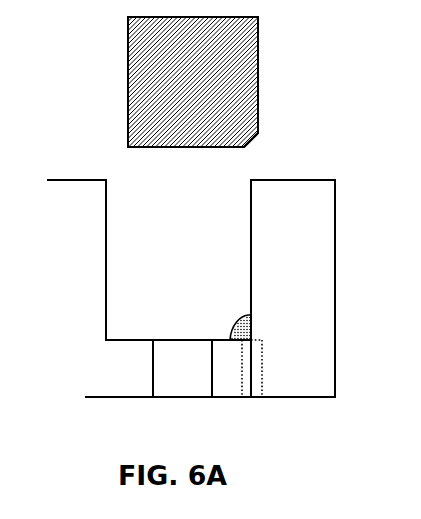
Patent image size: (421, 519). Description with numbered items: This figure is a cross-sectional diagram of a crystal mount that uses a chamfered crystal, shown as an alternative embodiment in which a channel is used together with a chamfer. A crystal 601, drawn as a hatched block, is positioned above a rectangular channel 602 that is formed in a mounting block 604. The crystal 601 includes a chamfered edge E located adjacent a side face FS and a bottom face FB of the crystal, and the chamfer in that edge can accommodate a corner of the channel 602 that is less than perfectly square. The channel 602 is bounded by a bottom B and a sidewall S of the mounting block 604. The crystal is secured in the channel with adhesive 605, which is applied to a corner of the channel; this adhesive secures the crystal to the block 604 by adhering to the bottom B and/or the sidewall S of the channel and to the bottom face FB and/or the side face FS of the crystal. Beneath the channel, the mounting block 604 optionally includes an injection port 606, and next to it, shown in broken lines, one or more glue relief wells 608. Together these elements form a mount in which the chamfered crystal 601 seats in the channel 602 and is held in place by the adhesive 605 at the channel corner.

The crystal 601 is at (127, 80).
The rectangular channel 602 is at (117, 195).
The mounting block 604 is at (297, 178).
The adhesive 605 is at (243, 316).
The injection port 606 is at (187, 393).
The glue relief well 608 is at (252, 393).
The side face FS is at (258, 60).
The bottom face FB is at (170, 147).
The chamfered edge E is at (252, 142).
The sidewall S is at (251, 191).
The bottom B is at (108, 347).